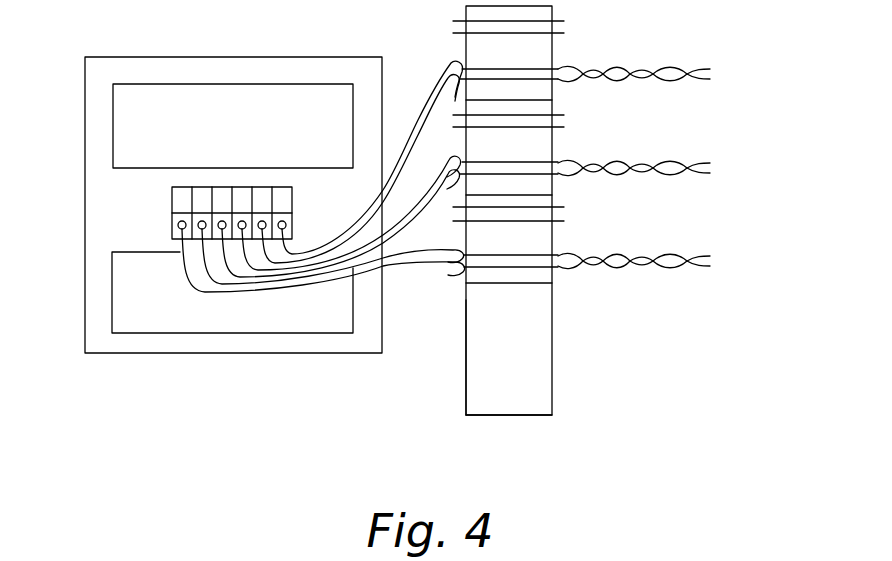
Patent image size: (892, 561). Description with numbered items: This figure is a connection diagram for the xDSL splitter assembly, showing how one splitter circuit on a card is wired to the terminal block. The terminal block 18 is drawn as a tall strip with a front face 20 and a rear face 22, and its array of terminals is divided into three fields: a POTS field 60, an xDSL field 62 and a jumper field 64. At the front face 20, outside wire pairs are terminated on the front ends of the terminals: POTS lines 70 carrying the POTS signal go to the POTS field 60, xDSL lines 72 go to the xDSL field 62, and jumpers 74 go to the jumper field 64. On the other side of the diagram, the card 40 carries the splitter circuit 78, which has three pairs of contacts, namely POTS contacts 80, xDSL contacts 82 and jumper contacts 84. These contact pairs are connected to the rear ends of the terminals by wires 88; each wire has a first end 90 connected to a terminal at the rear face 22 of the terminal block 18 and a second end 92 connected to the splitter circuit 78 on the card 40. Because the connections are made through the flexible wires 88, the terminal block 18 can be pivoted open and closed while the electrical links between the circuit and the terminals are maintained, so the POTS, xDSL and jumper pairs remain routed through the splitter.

The terminal block 18 is at (511, 390).
The front face 20 is at (552, 357).
The rear face 22 is at (464, 373).
The card 40 is at (203, 353).
The POTS field 60 is at (552, 17).
The xDSL field 62 is at (545, 110).
The jumper field 64 is at (545, 277).
The POTS lines 70 is at (672, 68).
The xDSL lines 72 is at (672, 162).
The jumpers 74 is at (672, 255).
The splitter circuit 78 is at (233, 126).
The POTS contacts 80 is at (262, 220).
The xDSL contacts 82 is at (222, 220).
The jumper contacts 84 is at (201, 220).
The wires 88 is at (418, 117).
The first end 90 is at (452, 272).
The second end 92 is at (172, 238).